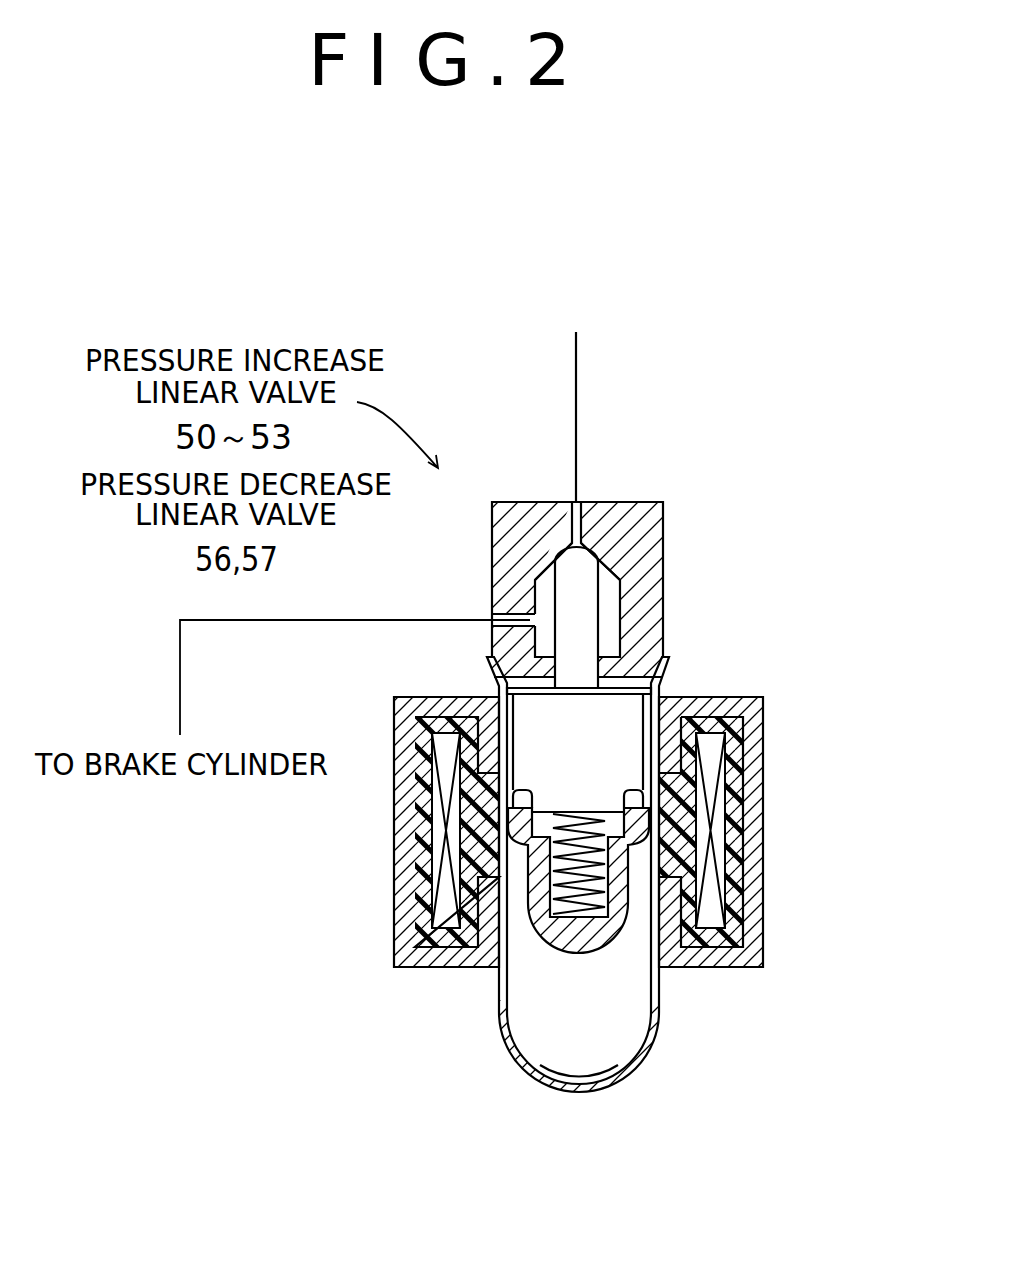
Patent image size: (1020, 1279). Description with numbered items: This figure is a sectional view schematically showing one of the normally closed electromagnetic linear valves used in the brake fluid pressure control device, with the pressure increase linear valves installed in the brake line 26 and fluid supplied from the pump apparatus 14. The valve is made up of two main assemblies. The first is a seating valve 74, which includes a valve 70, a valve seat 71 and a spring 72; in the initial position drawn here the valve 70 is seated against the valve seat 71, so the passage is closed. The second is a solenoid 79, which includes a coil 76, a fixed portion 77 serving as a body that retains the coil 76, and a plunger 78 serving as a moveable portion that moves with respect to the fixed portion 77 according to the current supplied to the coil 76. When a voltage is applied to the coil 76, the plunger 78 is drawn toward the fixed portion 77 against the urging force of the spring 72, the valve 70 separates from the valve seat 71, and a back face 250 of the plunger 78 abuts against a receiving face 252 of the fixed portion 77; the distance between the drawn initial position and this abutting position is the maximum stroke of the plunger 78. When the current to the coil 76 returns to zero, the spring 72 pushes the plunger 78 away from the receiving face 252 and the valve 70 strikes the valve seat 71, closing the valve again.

The pump apparatus 14 is at (575, 307).
The brake line 26 is at (577, 435).
The valve 70 is at (580, 562).
The valve seat 71 is at (602, 572).
The spring 72 is at (506, 1048).
The seating valve 74 is at (720, 582).
The coil 76 is at (715, 837).
The fixed portion 77 is at (608, 1047).
The plunger 78 is at (620, 705).
The solenoid 79 is at (790, 894).
The back face 250 is at (640, 803).
The receiving face 252 is at (515, 780).